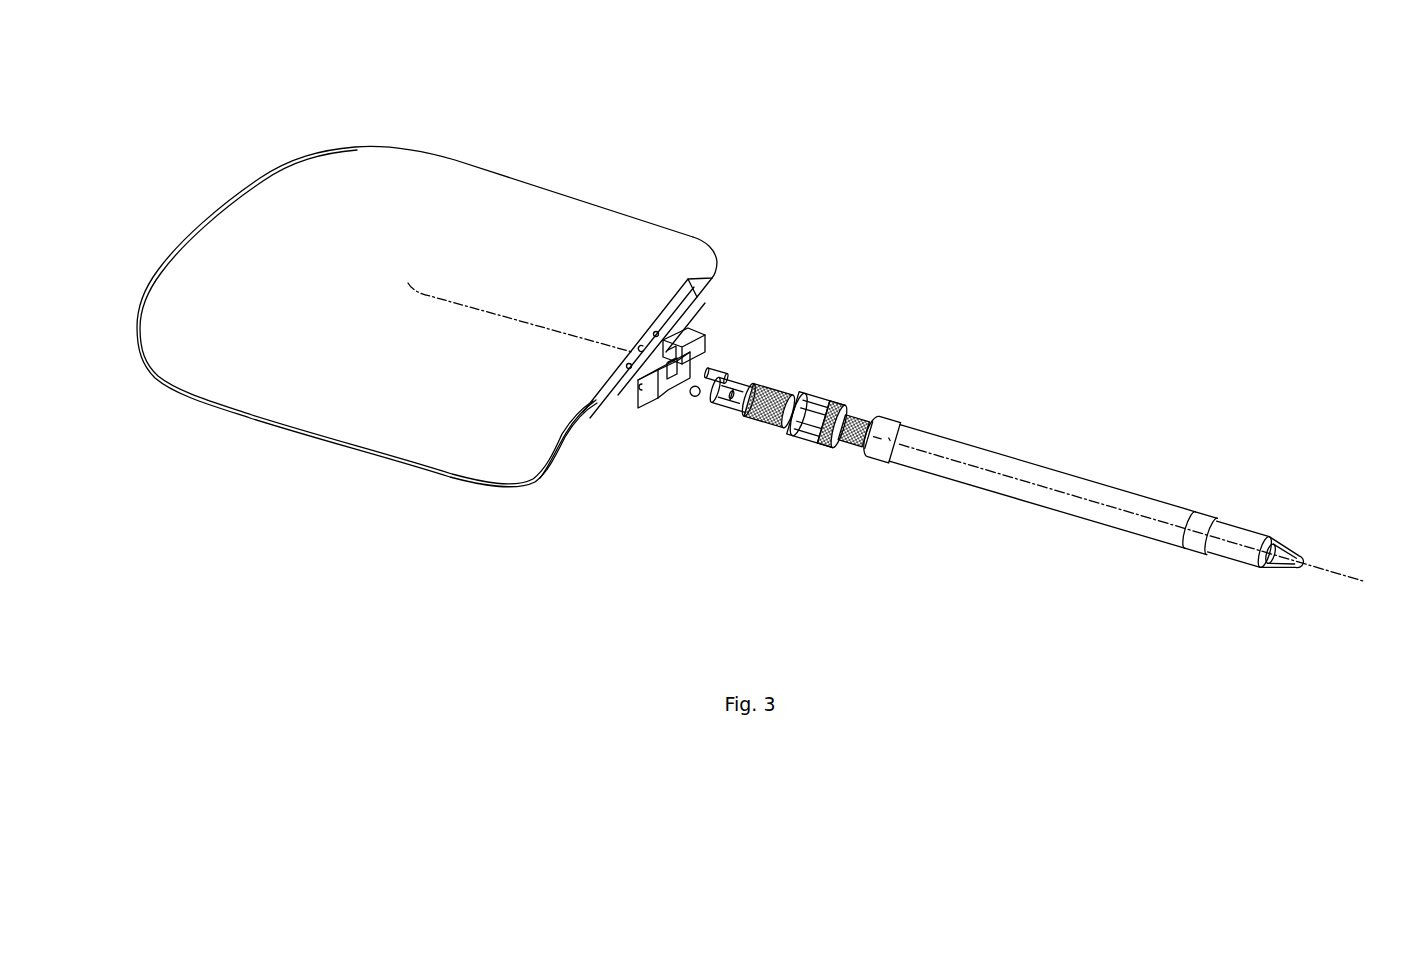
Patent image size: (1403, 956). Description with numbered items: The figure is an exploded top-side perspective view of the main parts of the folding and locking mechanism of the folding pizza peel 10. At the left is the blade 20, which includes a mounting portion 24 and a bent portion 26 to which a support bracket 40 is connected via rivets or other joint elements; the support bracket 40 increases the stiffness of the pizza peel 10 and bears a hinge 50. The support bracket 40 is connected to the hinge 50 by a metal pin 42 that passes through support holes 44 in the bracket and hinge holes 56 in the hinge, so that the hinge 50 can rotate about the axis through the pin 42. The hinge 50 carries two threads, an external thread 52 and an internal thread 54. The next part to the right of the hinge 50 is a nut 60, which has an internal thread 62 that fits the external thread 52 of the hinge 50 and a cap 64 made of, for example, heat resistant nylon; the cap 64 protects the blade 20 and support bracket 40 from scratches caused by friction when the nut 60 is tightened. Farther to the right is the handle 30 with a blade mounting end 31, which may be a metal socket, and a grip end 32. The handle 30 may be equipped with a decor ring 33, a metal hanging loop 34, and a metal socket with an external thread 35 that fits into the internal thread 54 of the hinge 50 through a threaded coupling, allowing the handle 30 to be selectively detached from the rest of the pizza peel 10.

The folding pizza peel 10 is at (670, 136).
The blade 20 is at (505, 171).
The mounting portion 24 is at (688, 285).
The bent portion 26 is at (558, 445).
The handle 30 is at (1048, 450).
The blade mounting end 31 is at (903, 424).
The grip end 32 is at (1178, 506).
The decor ring 33 is at (1190, 548).
The metal hanging loop 34 is at (1277, 568).
The external thread 35 is at (863, 418).
The support bracket 40 is at (655, 407).
The metal pin 42 is at (712, 372).
The support holes 44 is at (700, 347).
The hinge 50 is at (779, 370).
The external thread 52 is at (740, 420).
The internal thread 54 is at (790, 387).
The hinge holes 56 is at (717, 400).
The nut 60 is at (837, 386).
The internal thread 62 is at (838, 445).
The cap 64 is at (800, 432).